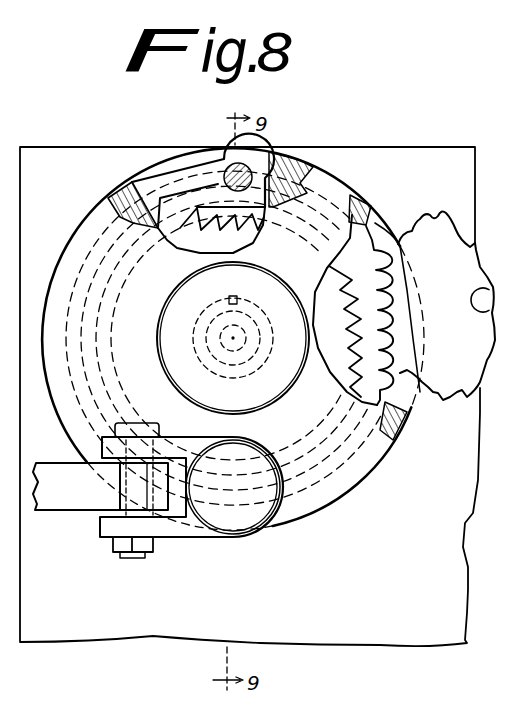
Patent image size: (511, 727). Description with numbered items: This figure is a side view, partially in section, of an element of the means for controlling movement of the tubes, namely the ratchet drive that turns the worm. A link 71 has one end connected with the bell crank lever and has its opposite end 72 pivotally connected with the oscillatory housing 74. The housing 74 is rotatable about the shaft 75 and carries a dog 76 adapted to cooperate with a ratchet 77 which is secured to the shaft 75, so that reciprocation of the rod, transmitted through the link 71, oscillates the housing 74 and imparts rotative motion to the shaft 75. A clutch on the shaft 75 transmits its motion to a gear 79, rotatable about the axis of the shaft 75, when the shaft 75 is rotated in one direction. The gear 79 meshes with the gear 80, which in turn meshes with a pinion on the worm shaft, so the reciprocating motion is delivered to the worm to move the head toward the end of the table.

The link 71 is at (57, 503).
The opposite end of link 72 is at (123, 550).
The oscillatory housing 74 is at (336, 486).
The shaft 75 is at (233, 340).
The dog 76 is at (190, 171).
The ratchet 77 is at (218, 218).
The gear 79 is at (403, 405).
The gear 80 is at (433, 212).